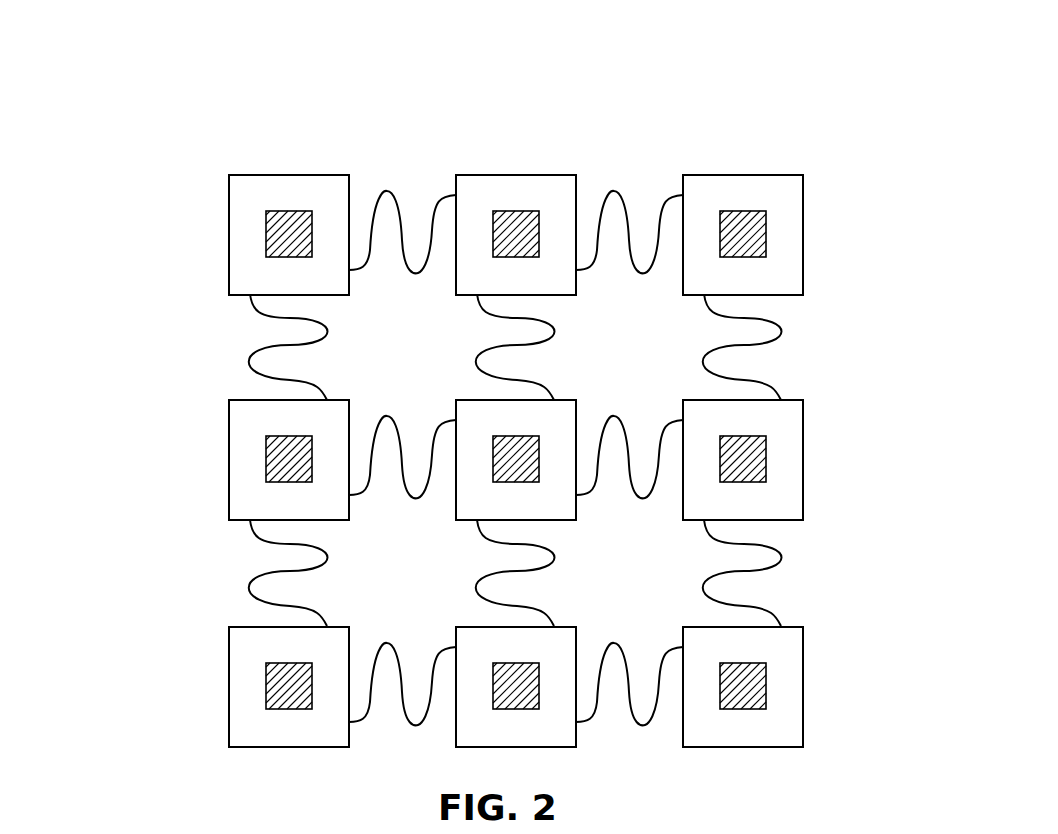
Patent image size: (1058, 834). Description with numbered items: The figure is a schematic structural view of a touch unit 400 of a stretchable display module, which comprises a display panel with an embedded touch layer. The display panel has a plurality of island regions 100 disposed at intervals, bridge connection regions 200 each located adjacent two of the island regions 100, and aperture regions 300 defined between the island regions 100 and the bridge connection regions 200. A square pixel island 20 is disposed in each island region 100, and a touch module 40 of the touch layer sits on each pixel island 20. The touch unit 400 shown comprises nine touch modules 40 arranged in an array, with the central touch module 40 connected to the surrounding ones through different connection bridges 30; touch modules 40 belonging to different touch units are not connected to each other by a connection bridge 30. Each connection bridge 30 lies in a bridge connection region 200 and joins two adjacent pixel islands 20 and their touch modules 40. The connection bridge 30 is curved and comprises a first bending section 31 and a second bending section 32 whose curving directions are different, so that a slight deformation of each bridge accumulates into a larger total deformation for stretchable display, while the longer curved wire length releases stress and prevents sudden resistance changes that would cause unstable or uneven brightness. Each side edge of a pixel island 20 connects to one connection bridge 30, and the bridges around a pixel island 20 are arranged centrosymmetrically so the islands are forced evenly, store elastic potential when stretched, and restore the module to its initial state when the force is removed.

The touch unit 400 is at (155, 60).
The pixel island 20 is at (287, 190).
The touch module 40 is at (511, 232).
The island region 100 is at (743, 168).
The aperture region 300 is at (633, 322).
The bridge connection region 200 is at (788, 357).
The connection bridge 30 is at (172, 355).
The first bending section 31 is at (318, 330).
The second bending section 32 is at (219, 384).